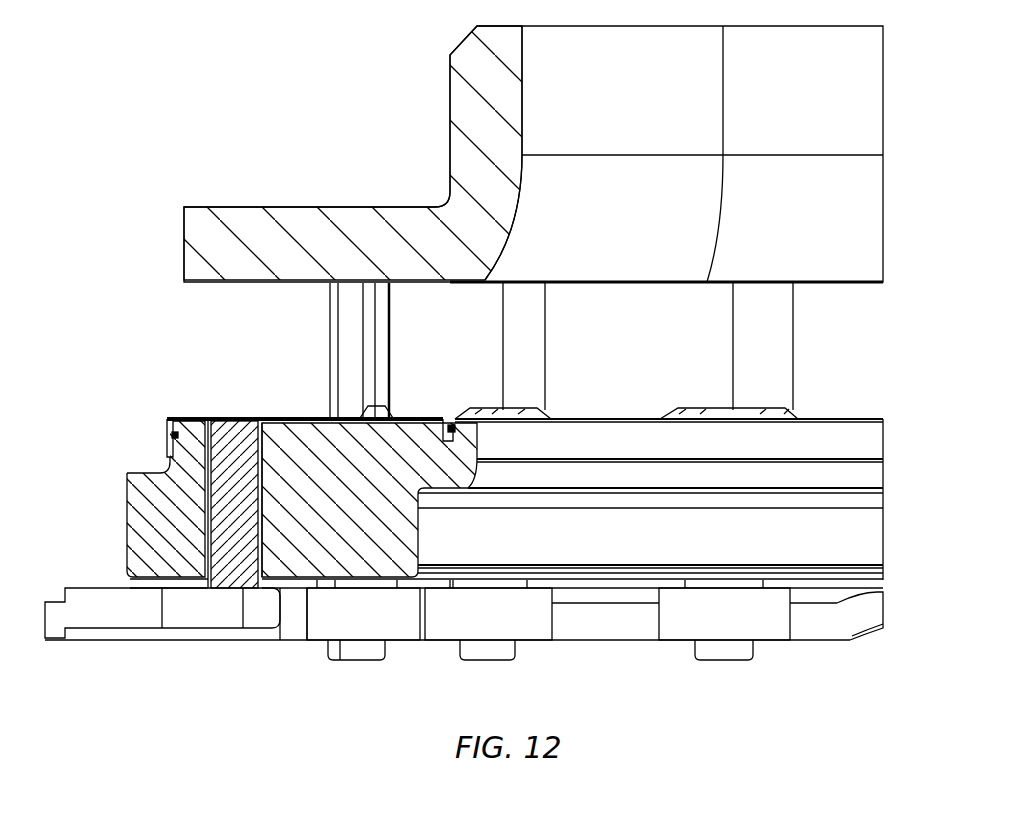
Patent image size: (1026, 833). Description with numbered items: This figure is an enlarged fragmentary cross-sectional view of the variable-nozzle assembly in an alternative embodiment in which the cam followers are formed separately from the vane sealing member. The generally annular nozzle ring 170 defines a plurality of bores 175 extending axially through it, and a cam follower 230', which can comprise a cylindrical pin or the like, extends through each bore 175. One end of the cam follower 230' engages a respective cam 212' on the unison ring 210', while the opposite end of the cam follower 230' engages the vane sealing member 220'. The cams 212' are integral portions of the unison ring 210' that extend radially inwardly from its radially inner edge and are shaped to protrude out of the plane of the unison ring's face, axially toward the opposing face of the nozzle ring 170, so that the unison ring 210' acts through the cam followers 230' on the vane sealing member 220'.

The vane sealing member 220' is at (497, 397).
The nozzle ring 170 is at (132, 495).
The bore 175 is at (208, 500).
The cam follower 230' is at (371, 500).
The cam 212' is at (506, 638).
The unison ring 210' is at (464, 654).